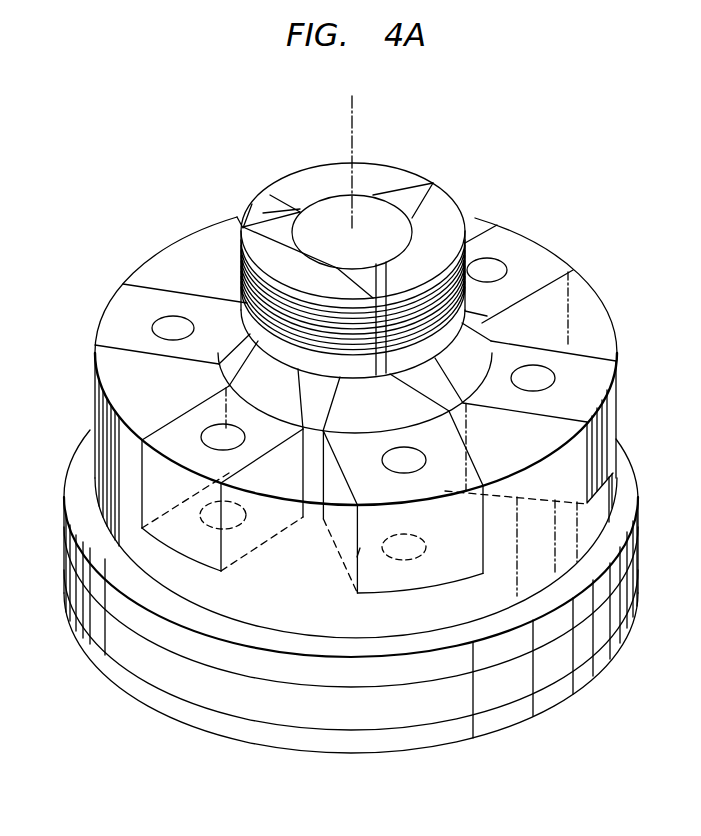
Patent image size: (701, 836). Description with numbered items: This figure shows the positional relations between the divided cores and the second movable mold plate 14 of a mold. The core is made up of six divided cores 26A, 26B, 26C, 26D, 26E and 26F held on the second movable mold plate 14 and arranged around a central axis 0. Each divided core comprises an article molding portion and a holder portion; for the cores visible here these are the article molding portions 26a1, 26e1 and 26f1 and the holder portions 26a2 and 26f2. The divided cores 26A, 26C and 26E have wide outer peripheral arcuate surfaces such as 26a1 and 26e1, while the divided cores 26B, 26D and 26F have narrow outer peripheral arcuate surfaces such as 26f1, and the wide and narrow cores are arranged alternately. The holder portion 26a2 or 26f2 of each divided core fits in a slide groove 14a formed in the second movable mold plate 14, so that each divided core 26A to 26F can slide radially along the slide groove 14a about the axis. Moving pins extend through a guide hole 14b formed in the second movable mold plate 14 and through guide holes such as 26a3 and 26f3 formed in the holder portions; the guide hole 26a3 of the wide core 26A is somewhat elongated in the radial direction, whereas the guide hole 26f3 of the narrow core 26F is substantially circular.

The center axis 0 is at (351, 152).
The second movable mold plate 14 is at (518, 586).
The slide groove 14a is at (357, 557).
The guide hole 14b is at (231, 530).
The divided core 26A is at (238, 243).
The divided core 26B is at (252, 204).
The divided core 26C is at (278, 192).
The divided core 26D is at (400, 187).
The divided core 26E is at (440, 212).
The divided core 26F is at (478, 235).
The article molding portion 26a1 is at (238, 280).
The holder portion 26a2 is at (167, 537).
The guide hole 26a3 is at (223, 440).
The article molding portion 26e1 is at (562, 272).
The article molding portion 26f1 is at (380, 376).
The holder portion 26f2 is at (450, 568).
The guide hole 26f3 is at (405, 463).